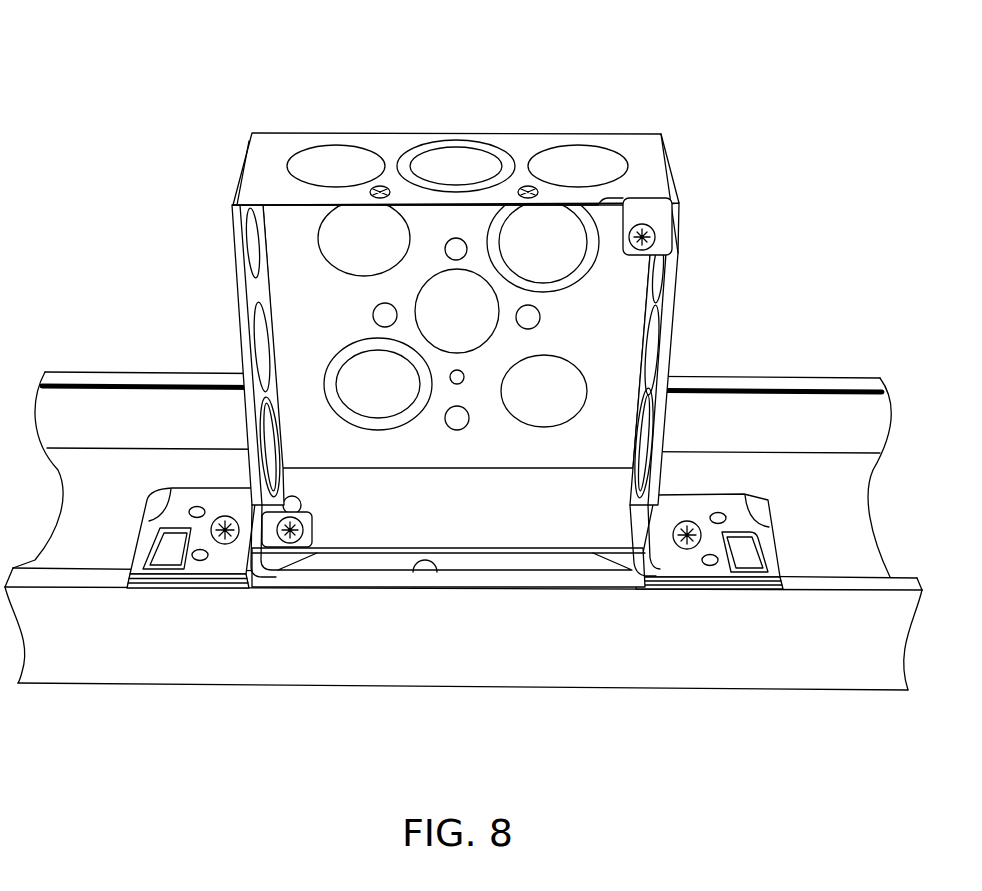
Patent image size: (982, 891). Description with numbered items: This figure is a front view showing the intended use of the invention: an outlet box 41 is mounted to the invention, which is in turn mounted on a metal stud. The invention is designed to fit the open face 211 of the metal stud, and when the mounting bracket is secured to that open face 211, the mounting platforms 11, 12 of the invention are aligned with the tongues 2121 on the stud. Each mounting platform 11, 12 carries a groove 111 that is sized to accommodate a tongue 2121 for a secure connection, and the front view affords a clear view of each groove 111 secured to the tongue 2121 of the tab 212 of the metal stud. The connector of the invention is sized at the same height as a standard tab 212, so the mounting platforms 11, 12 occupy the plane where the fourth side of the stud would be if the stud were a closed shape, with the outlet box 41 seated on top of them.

The outlet box 41 is at (618, 112).
The mounting platform 11 is at (157, 503).
The mounting platform 12 is at (757, 507).
The groove 111 is at (207, 587).
The open face 211 is at (808, 520).
The tab 212 is at (562, 640).
The tongue 2121 is at (413, 574).